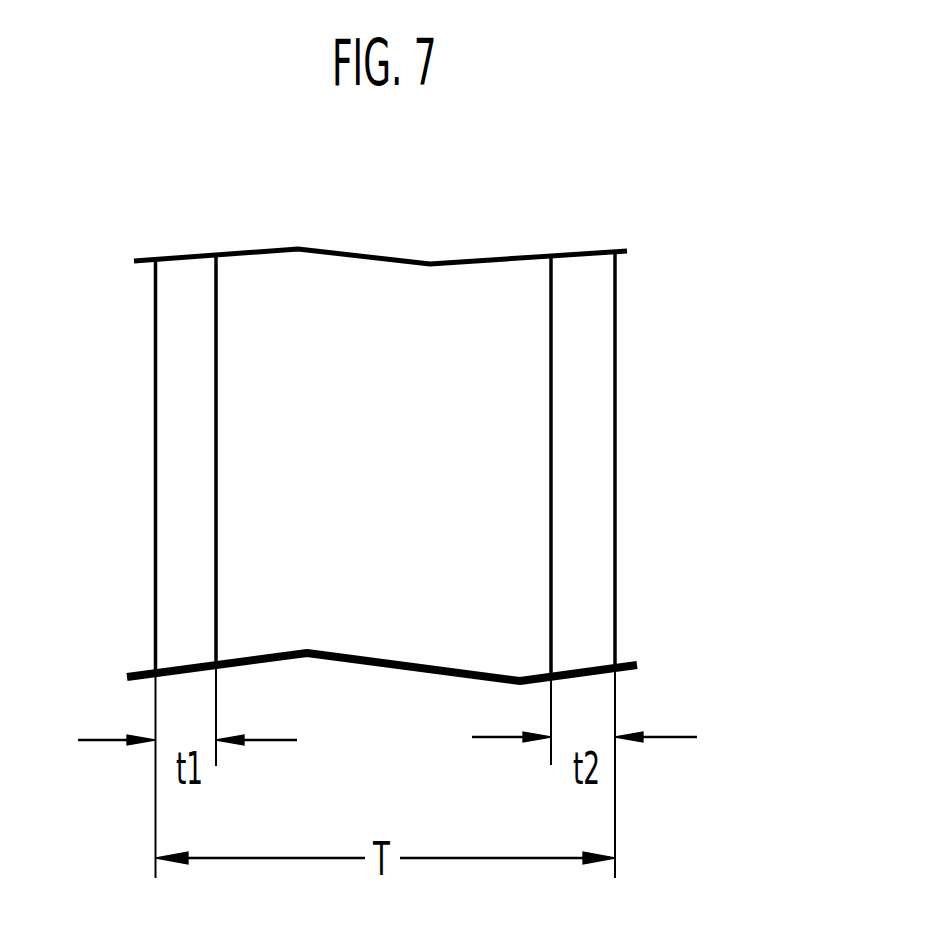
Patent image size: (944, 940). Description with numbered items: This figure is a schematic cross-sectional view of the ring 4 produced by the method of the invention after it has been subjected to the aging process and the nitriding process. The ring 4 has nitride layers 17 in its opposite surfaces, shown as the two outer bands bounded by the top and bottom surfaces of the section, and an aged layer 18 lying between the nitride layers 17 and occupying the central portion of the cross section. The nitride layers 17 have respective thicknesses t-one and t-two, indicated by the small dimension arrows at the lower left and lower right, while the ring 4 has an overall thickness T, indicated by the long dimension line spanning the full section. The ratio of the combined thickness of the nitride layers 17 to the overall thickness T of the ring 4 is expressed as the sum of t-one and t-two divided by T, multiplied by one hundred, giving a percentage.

The ring 4 is at (690, 259).
The nitride layers 17 is at (190, 510).
The aged layer 18 is at (454, 294).